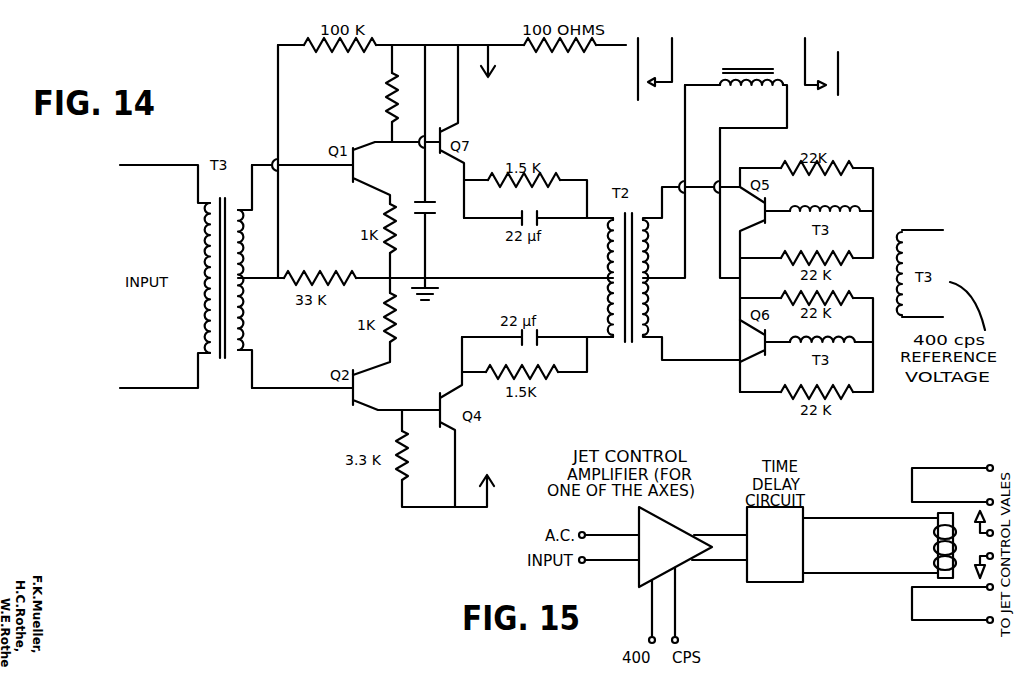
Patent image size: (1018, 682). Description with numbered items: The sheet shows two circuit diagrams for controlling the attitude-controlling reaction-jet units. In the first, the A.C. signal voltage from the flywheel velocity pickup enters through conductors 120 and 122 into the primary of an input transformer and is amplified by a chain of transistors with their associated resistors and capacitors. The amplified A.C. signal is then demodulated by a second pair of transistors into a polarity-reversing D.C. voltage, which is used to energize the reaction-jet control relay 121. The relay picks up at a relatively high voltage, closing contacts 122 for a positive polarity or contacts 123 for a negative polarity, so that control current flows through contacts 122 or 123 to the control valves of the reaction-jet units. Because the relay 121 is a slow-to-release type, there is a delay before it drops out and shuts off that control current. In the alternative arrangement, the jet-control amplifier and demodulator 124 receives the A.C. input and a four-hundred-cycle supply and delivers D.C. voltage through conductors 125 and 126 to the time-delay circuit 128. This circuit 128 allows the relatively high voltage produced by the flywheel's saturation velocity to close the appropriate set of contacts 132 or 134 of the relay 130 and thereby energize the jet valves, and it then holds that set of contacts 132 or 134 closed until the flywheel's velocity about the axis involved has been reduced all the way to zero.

In FIG. 14, the conductor 120 is at (136, 170).
In FIG. 14, the conductor / relay contacts 122 is at (124, 385).
In FIG. 14, the reaction-jet control relay 121 is at (739, 36).
In FIG. 14, the relay contacts 123 is at (825, 88).
In FIG. 15, the amplifier and demodulator 124 is at (680, 557).
In FIG. 15, the conductor 125 is at (720, 527).
In FIG. 15, the conductor 126 is at (719, 573).
In FIG. 15, the time-delay circuit 128 is at (786, 557).
In FIG. 15, the relay 130 is at (879, 542).
In FIG. 15, the relay contacts 132 is at (975, 521).
In FIG. 15, the relay contacts 134 is at (975, 573).